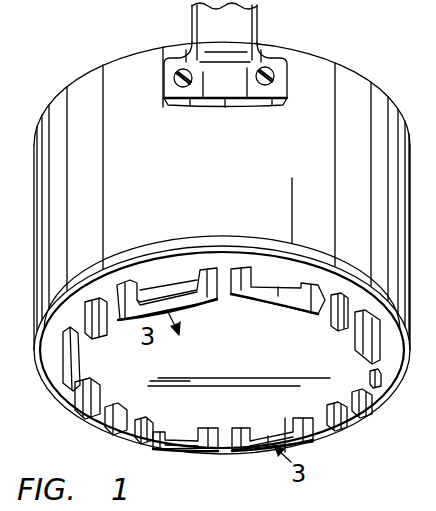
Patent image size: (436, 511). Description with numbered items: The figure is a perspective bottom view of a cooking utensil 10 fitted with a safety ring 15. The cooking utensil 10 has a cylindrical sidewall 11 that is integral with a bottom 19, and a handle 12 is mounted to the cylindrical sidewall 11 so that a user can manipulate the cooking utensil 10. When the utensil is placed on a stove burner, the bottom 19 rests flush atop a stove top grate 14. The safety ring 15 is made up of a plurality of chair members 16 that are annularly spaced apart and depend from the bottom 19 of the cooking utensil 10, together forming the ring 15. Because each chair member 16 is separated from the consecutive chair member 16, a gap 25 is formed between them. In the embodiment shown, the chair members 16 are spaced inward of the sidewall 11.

The cooking utensil 10 is at (119, 36).
The cylindrical sidewall 11 is at (188, 174).
The handle 12 is at (238, 30).
The stove top grate 14 is at (422, 237).
The safety ring 15 is at (202, 456).
The chair member 16 is at (360, 346).
The bottom 19 is at (232, 357).
The gap 25 is at (226, 298).